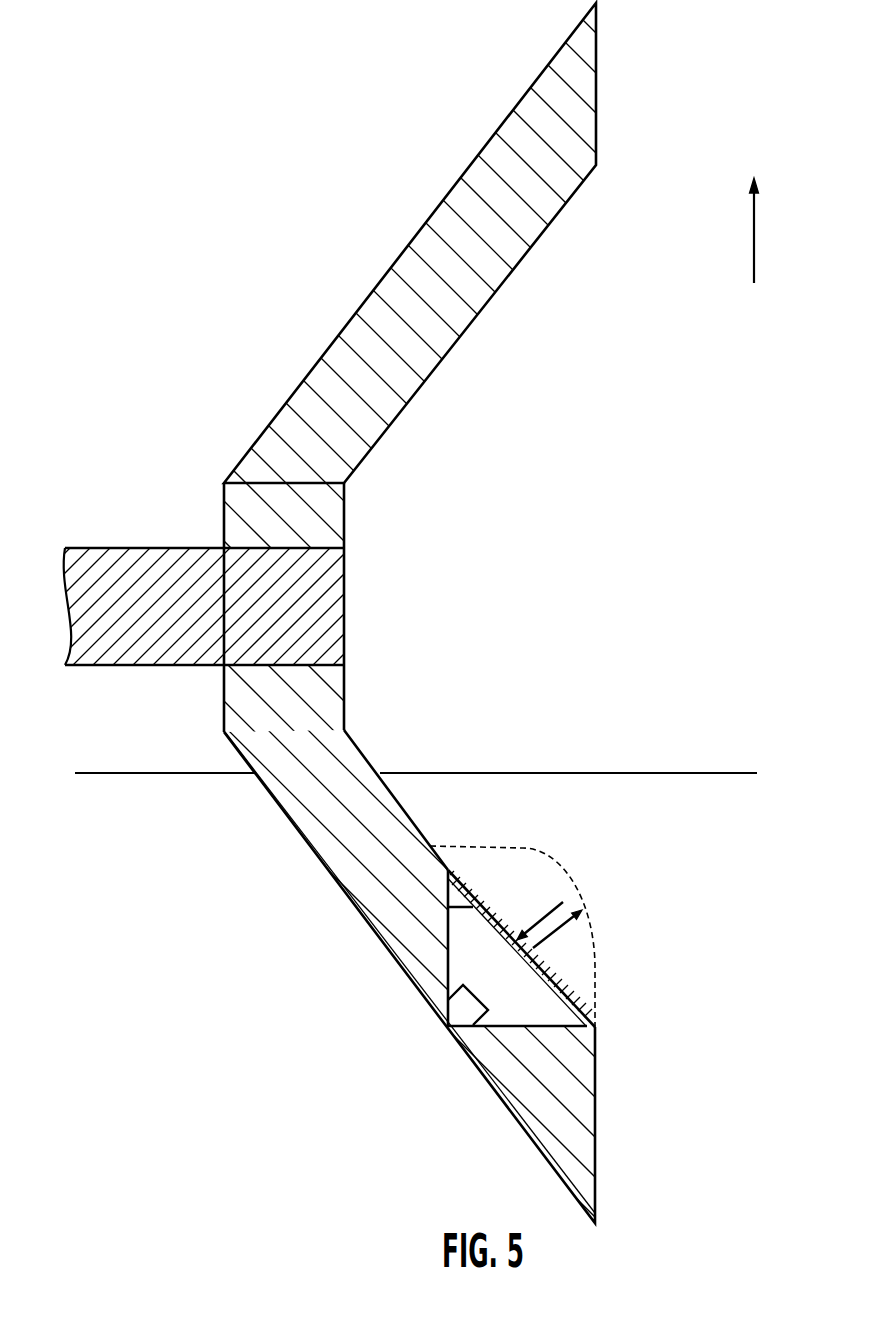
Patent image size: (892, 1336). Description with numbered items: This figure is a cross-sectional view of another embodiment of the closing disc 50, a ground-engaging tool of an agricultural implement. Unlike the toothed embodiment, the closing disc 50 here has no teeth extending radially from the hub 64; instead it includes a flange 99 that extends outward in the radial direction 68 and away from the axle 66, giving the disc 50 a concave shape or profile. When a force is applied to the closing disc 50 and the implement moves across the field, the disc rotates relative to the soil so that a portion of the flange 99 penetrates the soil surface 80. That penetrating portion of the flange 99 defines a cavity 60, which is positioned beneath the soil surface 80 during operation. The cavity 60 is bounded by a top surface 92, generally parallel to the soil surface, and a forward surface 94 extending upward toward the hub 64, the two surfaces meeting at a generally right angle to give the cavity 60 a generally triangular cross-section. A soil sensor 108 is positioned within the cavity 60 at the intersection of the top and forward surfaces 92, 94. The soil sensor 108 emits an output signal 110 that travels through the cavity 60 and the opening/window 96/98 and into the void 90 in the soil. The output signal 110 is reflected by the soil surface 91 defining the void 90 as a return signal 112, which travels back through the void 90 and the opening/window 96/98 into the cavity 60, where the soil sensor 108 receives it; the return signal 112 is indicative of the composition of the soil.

The closing disc 50 is at (200, 240).
The flange 99 is at (400, 257).
The hub 64 is at (345, 693).
The axle 66 is at (158, 548).
The radial direction 68 is at (754, 245).
The soil surface 80 is at (720, 773).
The top surface 92 is at (500, 1026).
The cavity 60 is at (472, 950).
The void 90 is at (500, 882).
The forward surface 94 is at (477, 903).
The return signal 112 is at (545, 918).
The output signal 110 is at (588, 931).
The opening 96 is at (569, 978).
The window 98 is at (560, 1002).
The soil surface defining the void 91 is at (595, 997).
The soil sensor 108 is at (481, 1002).